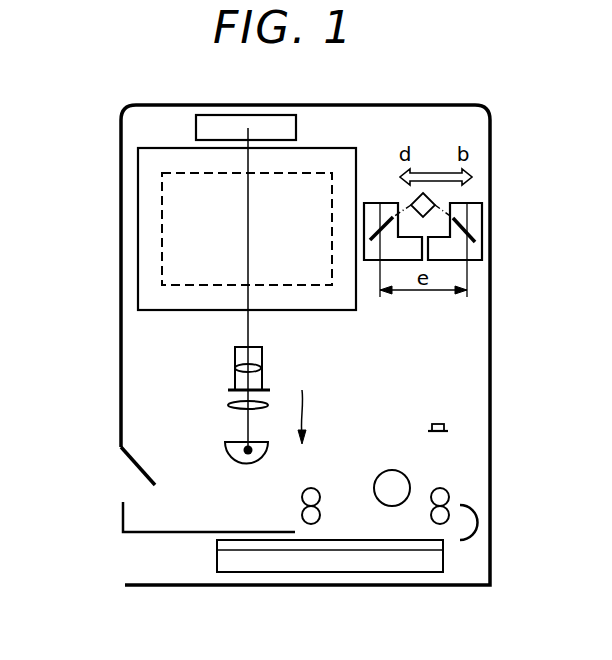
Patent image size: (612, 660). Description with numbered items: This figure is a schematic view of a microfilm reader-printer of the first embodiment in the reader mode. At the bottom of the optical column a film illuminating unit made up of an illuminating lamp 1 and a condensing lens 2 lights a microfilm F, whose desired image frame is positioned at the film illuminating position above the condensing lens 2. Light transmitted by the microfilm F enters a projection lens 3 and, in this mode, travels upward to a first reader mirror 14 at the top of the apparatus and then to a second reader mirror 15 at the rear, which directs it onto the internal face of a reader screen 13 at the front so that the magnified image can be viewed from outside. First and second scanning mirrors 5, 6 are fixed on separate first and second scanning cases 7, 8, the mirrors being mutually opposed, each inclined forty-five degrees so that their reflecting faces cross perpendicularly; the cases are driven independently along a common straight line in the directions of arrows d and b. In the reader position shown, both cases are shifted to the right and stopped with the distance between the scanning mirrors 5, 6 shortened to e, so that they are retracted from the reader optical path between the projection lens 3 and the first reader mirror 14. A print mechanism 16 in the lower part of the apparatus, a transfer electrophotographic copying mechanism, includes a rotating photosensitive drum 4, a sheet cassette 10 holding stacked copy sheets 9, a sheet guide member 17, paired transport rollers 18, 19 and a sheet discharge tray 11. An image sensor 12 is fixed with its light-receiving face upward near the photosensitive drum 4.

The illuminating lamp 1 is at (226, 452).
The condensing lens 2 is at (230, 404).
The projection lens 3 is at (235, 365).
The microfilm F is at (230, 390).
The electrophotographic photosensitive drum 4 is at (383, 480).
The first scanning mirror 5 is at (393, 220).
The second scanning mirror 6 is at (465, 223).
The first scanning case 7 is at (375, 257).
The second scanning case 8 is at (475, 252).
The copy sheets 9 is at (295, 573).
The sheet cassette 10 is at (217, 560).
The sheet discharge tray 11 is at (122, 522).
The image sensor 12 is at (443, 423).
The reader screen 13 is at (142, 195).
The first reader mirror 14 is at (212, 118).
The second reader mirror 15 is at (162, 238).
The print mechanism 16 is at (316, 383).
The sheet guide member 17 is at (478, 522).
The paired transport rollers 18 is at (441, 488).
The paired transport rollers 19 is at (302, 497).